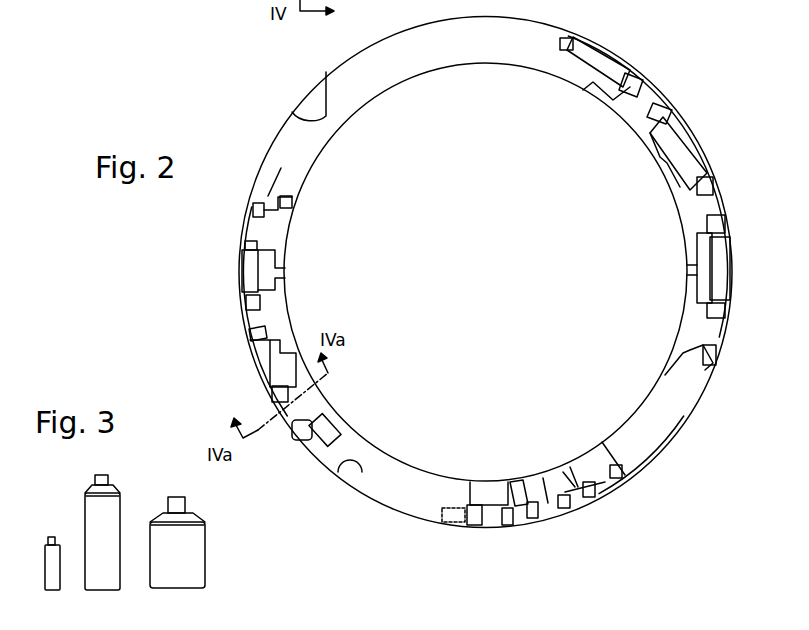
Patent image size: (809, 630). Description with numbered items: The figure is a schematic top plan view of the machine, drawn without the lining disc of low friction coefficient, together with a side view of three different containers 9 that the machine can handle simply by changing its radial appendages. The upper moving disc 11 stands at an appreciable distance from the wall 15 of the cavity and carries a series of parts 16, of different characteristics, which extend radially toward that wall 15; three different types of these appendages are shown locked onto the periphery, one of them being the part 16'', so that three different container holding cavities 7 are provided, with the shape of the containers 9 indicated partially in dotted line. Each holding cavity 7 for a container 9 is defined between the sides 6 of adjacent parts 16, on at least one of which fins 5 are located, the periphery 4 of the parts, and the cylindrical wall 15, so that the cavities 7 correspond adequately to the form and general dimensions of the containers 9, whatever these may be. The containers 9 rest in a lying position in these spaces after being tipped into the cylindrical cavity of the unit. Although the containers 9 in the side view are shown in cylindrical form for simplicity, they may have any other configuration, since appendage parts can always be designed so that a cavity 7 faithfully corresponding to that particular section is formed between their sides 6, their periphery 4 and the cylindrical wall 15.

The upper moving disc 11 is at (492, 82).
The wall of the cavity 15 is at (326, 72).
The parts 16 is at (396, 381).
The parts 16'' is at (637, 116).
The containers 9 is at (252, 270).
The sides of the parts 6 is at (262, 336).
The holding cavities 7 is at (280, 370).
The fins 5 is at (300, 432).
The periphery 4 is at (325, 440).